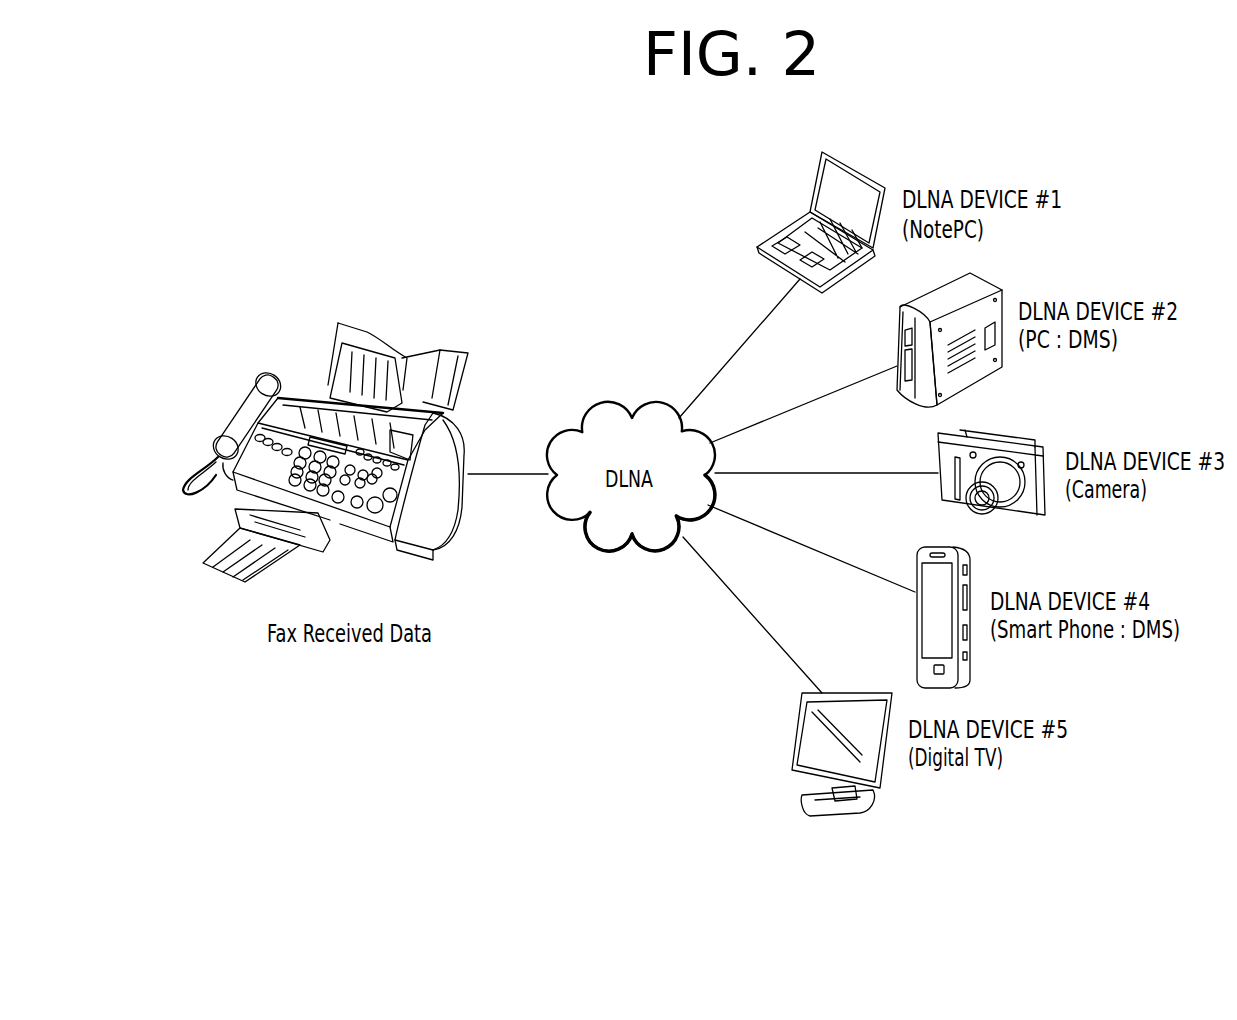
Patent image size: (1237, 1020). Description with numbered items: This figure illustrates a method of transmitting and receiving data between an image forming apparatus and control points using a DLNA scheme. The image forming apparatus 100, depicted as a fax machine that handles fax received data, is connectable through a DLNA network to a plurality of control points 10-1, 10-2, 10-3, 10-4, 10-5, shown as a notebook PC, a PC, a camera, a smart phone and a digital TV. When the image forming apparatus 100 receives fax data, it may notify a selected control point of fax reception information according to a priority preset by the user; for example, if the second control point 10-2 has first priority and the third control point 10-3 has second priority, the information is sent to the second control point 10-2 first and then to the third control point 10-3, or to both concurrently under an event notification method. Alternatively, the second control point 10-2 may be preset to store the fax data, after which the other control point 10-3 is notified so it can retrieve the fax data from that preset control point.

The image forming apparatus 100 is at (257, 376).
The first control point 10-1 is at (870, 187).
The second control point 10-2 is at (980, 280).
The third control point 10-3 is at (1037, 445).
The fourth control point 10-4 is at (968, 552).
The fifth control point 10-5 is at (858, 810).